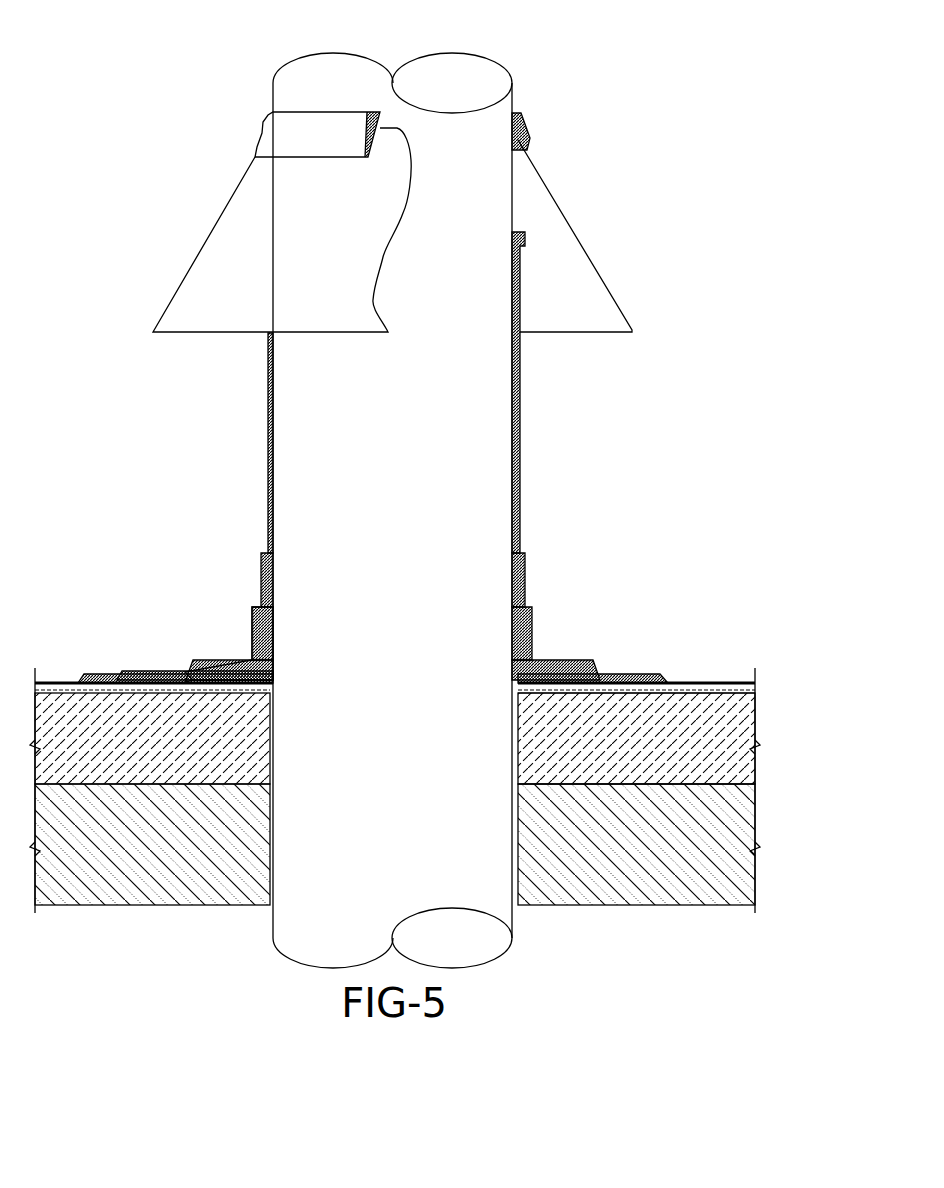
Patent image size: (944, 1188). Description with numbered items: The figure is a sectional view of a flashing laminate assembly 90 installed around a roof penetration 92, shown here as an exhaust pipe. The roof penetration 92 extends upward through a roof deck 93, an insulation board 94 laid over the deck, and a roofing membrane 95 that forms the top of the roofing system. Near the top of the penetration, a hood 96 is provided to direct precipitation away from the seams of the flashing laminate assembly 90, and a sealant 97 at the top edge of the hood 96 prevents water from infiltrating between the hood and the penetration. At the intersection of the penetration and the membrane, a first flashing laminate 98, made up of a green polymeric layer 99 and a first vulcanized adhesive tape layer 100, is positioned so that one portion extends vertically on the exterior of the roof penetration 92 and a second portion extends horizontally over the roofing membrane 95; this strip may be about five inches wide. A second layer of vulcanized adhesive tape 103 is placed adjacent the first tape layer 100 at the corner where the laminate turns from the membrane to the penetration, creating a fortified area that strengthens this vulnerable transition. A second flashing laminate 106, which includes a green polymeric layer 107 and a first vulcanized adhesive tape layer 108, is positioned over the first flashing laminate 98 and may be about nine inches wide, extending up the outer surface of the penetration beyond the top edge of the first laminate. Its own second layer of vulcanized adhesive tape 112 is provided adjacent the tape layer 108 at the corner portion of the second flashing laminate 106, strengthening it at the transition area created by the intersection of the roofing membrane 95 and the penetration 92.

The flashing laminate assembly 90 is at (583, 550).
The roof penetration 92 is at (381, 507).
The roof deck 93 is at (663, 867).
The insulation board 94 is at (733, 713).
The roofing membrane 95 is at (727, 710).
The hood 96 is at (558, 262).
The sealant 97 is at (528, 127).
The first flashing laminate 98 is at (102, 673).
The green polymeric layer 99 is at (681, 672).
The first vulcanized adhesive tape layer 100 is at (679, 690).
The second layer of vulcanized adhesive tape 103 is at (550, 684).
The second flashing laminate 106 is at (590, 658).
The green polymeric layer 107 is at (208, 662).
The first vulcanized adhesive tape layer 108 is at (275, 447).
The second layer of vulcanized adhesive tape 112 is at (275, 633).